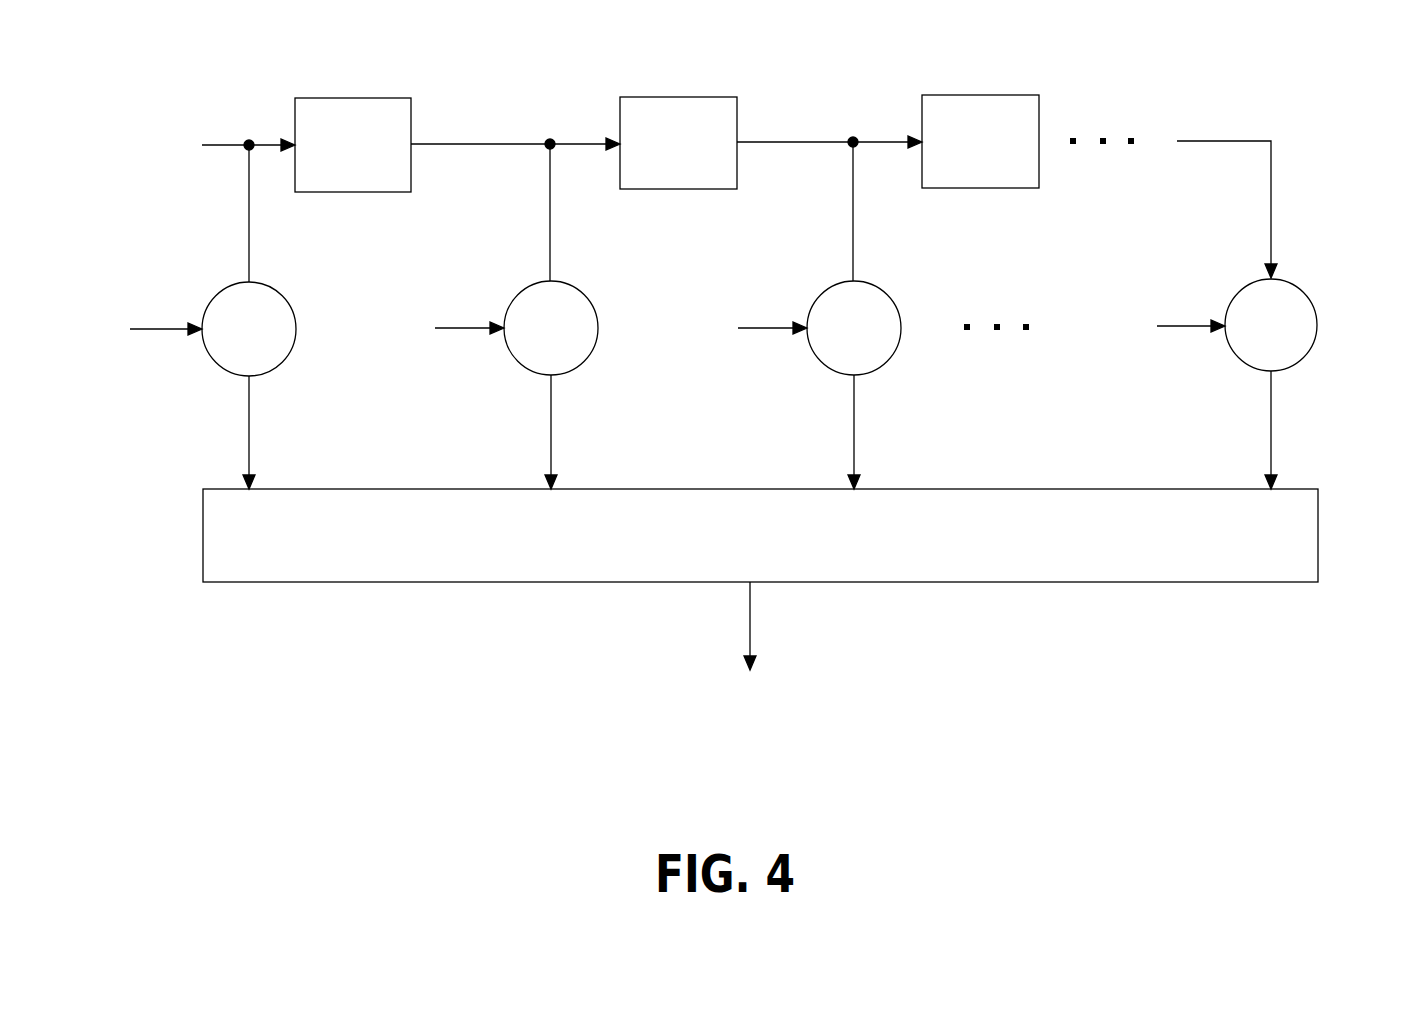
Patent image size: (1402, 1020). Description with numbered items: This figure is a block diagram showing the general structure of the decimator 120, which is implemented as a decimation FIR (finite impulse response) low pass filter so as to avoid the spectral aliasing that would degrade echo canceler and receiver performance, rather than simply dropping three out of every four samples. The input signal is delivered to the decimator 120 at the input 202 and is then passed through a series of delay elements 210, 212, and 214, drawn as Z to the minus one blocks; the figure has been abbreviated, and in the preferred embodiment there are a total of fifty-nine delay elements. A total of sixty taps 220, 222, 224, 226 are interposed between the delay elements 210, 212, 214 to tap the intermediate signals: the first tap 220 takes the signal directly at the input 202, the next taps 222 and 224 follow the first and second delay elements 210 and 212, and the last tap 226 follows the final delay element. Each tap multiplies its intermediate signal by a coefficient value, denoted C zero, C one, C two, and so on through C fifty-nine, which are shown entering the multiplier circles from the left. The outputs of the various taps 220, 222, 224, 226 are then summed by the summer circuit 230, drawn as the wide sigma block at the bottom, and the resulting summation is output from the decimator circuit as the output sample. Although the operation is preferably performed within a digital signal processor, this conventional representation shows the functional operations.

The decimator circuit 120 is at (866, 47).
The input 202 is at (225, 140).
The delay element 210 is at (353, 98).
The delay element 212 is at (678, 97).
The delay element 214 is at (979, 95).
The tap 220 is at (282, 292).
The tap 222 is at (583, 290).
The tap 224 is at (886, 290).
The tap 226 is at (1300, 283).
The summer circuit 230 is at (355, 583).